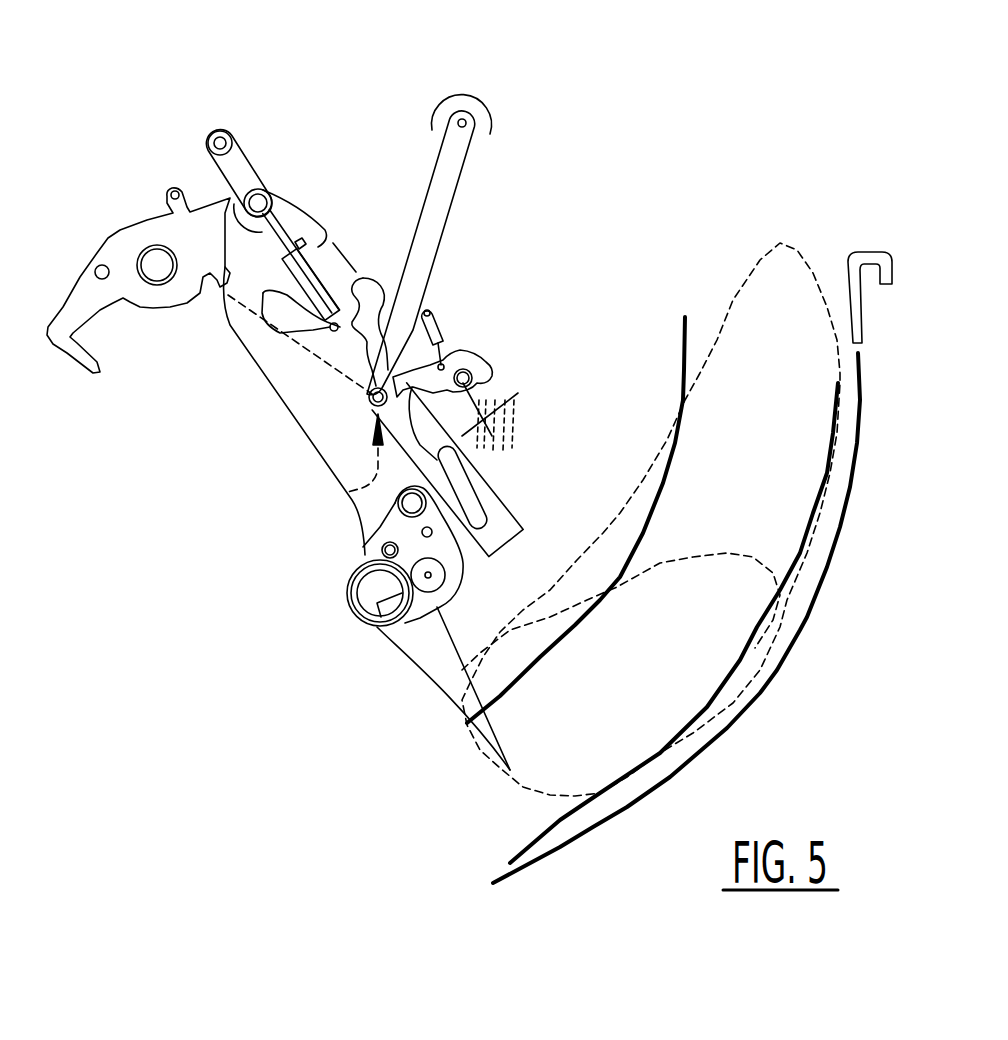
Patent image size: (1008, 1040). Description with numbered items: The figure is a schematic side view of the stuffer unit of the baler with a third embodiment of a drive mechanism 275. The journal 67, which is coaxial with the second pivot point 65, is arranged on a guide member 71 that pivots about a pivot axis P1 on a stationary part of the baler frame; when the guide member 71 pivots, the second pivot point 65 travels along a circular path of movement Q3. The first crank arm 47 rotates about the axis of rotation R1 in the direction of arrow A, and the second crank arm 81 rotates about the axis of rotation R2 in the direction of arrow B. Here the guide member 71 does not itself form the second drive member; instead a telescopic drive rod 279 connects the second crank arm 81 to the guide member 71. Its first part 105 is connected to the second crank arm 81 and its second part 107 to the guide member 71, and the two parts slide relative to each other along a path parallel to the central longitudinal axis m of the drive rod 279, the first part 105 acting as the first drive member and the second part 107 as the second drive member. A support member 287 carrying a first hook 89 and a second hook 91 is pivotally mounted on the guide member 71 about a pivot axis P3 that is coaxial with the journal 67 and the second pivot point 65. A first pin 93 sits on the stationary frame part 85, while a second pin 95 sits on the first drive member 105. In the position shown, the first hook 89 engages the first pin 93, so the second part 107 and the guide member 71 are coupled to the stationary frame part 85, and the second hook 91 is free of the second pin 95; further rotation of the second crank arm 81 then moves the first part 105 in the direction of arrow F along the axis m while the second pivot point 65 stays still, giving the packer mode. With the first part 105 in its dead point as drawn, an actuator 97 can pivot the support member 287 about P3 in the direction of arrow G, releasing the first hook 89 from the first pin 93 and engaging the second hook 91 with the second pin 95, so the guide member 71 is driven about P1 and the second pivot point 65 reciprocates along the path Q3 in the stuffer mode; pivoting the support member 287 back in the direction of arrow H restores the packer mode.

The first crank arm 47 is at (122, 292).
The second pivot point 65 is at (370, 400).
The journal 67 is at (348, 492).
The guide member 71 is at (437, 220).
The second crank arm 81 is at (247, 167).
The stationary frame part 85 is at (512, 445).
The first hook 89 is at (487, 372).
The second hook 91 is at (363, 278).
The first pin 93 is at (500, 395).
The second pin 95 is at (287, 330).
The actuator 97 is at (437, 327).
The first part of the telescopic drive rod 105 is at (327, 227).
The second part of the telescopic drive rod 107 is at (343, 353).
The drive mechanism 275 is at (646, 138).
The telescopic drive rod 279 is at (346, 224).
The support member 287 is at (470, 447).
The axis of rotation R1 is at (153, 262).
The axis of rotation R2 is at (228, 140).
The pivot axis P1 is at (465, 120).
The pivot axis P3 is at (372, 397).
The path of movement Q3 is at (334, 327).
The central longitudinal axis m is at (240, 170).
The direction of arrow F is at (172, 116).
The direction of arrow A is at (102, 133).
The direction of arrow B is at (210, 56).
The direction of arrow G is at (526, 222).
The direction of arrow H is at (595, 197).